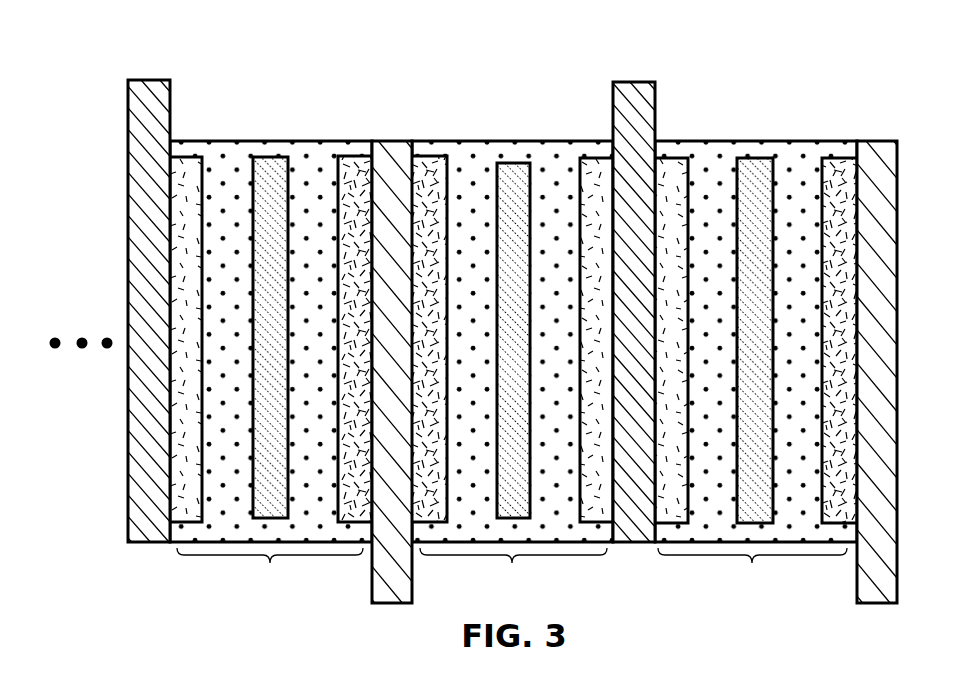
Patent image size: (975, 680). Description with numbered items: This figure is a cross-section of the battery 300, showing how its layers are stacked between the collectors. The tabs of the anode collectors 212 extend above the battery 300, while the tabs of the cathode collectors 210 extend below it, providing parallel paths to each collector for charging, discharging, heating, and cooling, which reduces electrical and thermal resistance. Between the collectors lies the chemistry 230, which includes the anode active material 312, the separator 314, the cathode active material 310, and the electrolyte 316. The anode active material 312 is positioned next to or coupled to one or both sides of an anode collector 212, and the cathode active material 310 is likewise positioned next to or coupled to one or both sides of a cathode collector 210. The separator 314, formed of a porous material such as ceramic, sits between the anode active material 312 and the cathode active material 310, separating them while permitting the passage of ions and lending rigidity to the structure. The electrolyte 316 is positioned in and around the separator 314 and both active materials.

The battery 300 is at (104, 30).
The cathode collector 210 is at (380, 141).
The anode collector 212 is at (145, 80).
The chemistry 230 is at (512, 570).
The cathode active material 310 is at (352, 156).
The anode active material 312 is at (181, 156).
The separator 314 is at (270, 157).
The electrolyte 316 is at (318, 141).